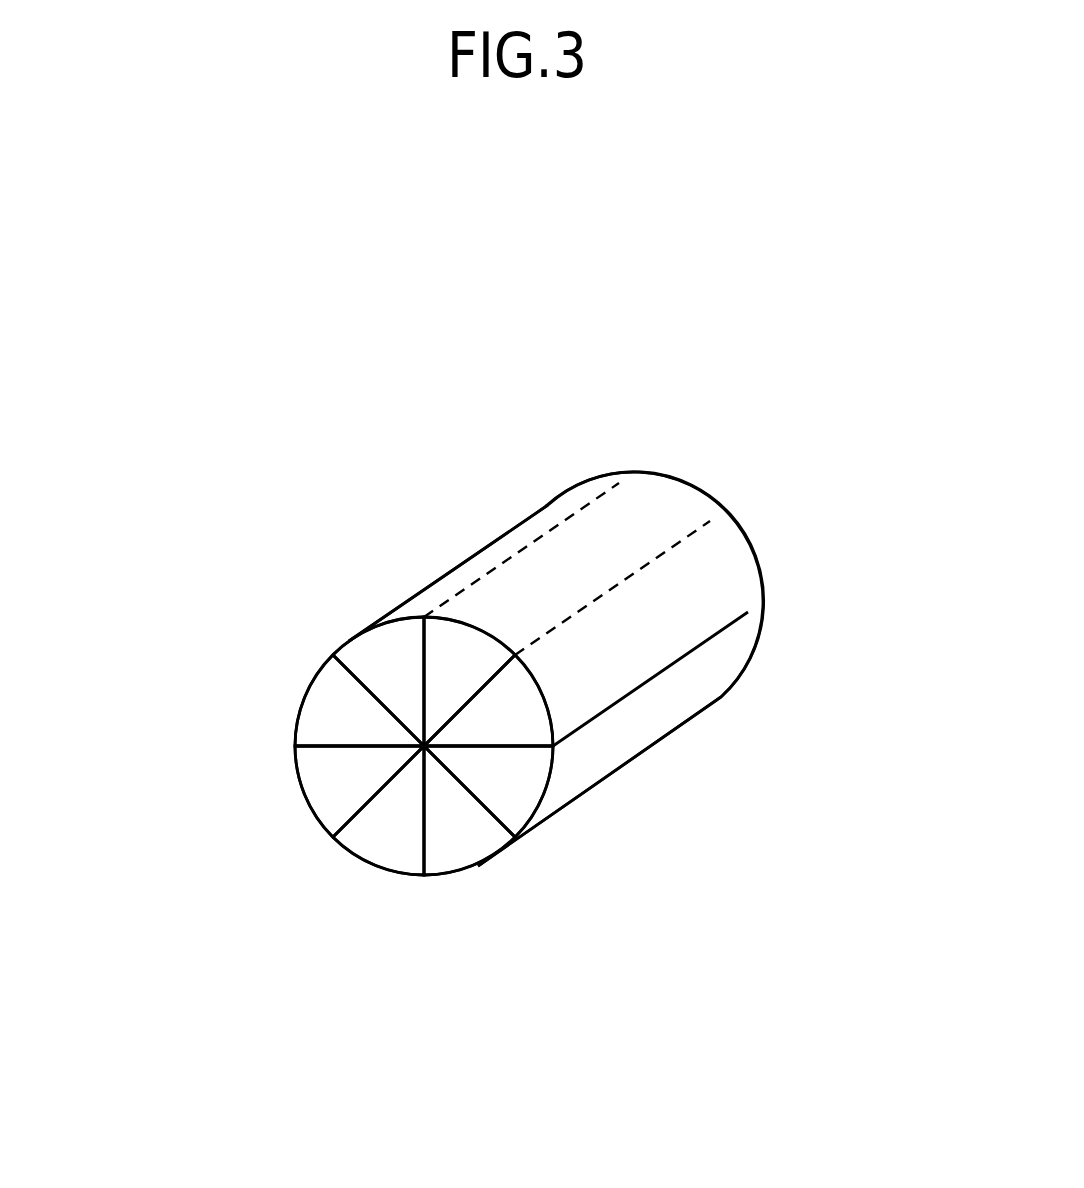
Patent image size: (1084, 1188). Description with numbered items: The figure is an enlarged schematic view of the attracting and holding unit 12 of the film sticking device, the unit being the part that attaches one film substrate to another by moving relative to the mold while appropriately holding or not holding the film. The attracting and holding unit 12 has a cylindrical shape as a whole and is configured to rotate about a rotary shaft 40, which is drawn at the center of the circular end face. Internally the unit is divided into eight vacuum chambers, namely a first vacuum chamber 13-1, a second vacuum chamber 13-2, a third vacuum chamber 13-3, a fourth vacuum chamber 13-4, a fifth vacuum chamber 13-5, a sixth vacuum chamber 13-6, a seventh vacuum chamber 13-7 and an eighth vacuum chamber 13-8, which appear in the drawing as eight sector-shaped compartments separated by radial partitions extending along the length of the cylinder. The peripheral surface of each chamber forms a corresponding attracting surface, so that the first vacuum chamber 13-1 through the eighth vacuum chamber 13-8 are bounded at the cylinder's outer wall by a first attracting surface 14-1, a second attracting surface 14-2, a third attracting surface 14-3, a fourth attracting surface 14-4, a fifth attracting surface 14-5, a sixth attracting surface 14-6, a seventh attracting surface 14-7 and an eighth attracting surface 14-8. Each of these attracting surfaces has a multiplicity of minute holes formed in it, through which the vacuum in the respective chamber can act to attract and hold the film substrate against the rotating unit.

The attracting and holding unit 12 is at (676, 269).
The first vacuum chamber 13-1 is at (265, 628).
The second vacuum chamber 13-2 is at (685, 670).
The third vacuum chamber 13-3 is at (677, 700).
The fourth vacuum chamber 13-4 is at (639, 791).
The fifth vacuum chamber 13-5 is at (507, 849).
The sixth vacuum chamber 13-6 is at (308, 863).
The seventh vacuum chamber 13-7 is at (248, 797).
The eighth vacuum chamber 13-8 is at (237, 694).
The first attracting surface 14-1 is at (448, 595).
The second attracting surface 14-2 is at (622, 583).
The third attracting surface 14-3 is at (667, 628).
The fourth attracting surface 14-4 is at (640, 781).
The fifth attracting surface 14-5 is at (572, 832).
The sixth attracting surface 14-6 is at (377, 882).
The seventh attracting surface 14-7 is at (272, 768).
The eighth attracting surface 14-8 is at (283, 671).
The rotary shaft 40 is at (449, 891).